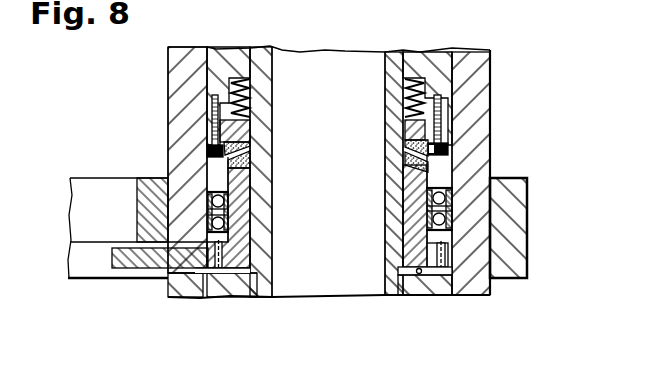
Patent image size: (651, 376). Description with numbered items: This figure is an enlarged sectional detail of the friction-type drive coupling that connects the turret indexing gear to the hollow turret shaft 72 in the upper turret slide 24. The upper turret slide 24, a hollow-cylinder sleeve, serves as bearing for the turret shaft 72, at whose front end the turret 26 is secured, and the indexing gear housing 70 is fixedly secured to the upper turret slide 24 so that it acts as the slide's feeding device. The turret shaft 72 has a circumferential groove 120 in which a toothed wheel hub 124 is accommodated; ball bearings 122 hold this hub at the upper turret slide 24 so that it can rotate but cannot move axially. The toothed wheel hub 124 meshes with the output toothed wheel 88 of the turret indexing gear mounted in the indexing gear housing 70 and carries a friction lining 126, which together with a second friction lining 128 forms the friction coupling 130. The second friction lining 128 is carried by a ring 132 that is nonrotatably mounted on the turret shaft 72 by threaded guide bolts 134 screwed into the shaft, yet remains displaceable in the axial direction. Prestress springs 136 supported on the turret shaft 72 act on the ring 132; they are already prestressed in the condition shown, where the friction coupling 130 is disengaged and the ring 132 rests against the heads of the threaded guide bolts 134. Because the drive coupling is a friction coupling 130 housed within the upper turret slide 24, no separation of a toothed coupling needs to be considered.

The upper turret slide 24 is at (473, 282).
The turret 26 is at (329, 149).
The indexing gear housing 70 is at (513, 230).
The turret shaft 72 is at (437, 52).
The output toothed wheel 88 is at (138, 260).
The circumferential groove 120 is at (420, 275).
The ball bearings 122 is at (436, 203).
The toothed wheel hub 124 is at (442, 257).
The friction lining 126 is at (397, 158).
The second friction lining 128 is at (402, 143).
The friction coupling 130 is at (433, 162).
The ring 132 is at (448, 138).
The threaded guide bolts 134 is at (441, 116).
The prestress springs 136 is at (407, 98).